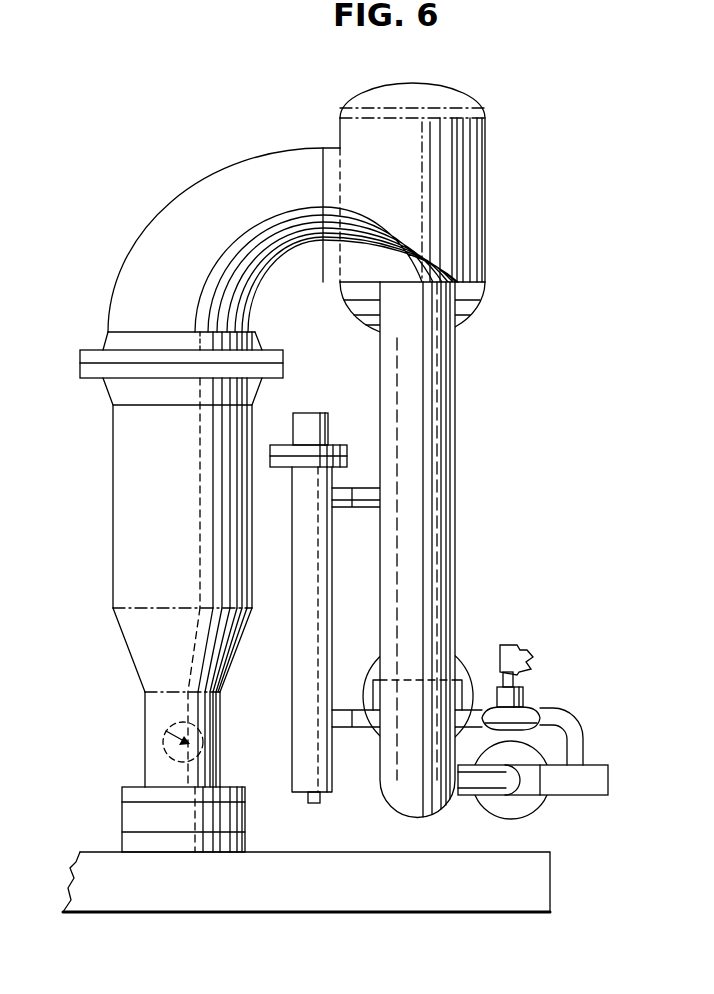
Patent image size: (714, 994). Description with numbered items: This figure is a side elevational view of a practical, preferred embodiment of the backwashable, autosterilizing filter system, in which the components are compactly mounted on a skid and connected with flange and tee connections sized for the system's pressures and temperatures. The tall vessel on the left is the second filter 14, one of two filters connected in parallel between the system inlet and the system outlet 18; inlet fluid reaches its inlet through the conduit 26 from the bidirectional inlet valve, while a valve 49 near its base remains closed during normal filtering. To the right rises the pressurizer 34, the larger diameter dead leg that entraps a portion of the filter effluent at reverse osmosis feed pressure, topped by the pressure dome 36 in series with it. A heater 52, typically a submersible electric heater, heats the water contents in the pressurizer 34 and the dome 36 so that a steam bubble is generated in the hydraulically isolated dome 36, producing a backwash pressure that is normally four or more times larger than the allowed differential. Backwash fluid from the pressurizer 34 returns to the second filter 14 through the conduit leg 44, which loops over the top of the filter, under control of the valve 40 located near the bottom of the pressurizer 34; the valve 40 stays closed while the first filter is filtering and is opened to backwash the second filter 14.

The second filter 14 is at (110, 527).
The system outlet 18 is at (572, 803).
The conduit 26 is at (163, 739).
The pressurizer 34 is at (430, 524).
The pressure dome 36 is at (479, 158).
The valve 40 is at (388, 826).
The conduit leg 44 is at (252, 180).
The valve 49 is at (148, 823).
The heater 52 is at (322, 590).